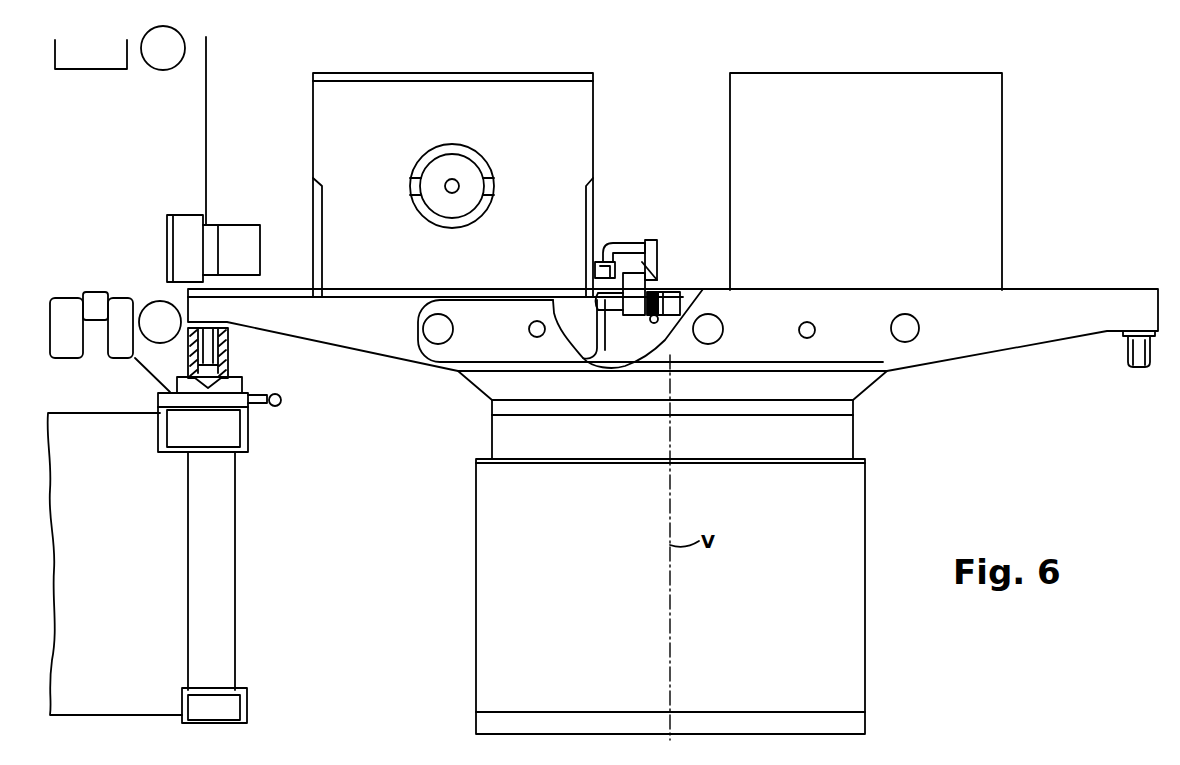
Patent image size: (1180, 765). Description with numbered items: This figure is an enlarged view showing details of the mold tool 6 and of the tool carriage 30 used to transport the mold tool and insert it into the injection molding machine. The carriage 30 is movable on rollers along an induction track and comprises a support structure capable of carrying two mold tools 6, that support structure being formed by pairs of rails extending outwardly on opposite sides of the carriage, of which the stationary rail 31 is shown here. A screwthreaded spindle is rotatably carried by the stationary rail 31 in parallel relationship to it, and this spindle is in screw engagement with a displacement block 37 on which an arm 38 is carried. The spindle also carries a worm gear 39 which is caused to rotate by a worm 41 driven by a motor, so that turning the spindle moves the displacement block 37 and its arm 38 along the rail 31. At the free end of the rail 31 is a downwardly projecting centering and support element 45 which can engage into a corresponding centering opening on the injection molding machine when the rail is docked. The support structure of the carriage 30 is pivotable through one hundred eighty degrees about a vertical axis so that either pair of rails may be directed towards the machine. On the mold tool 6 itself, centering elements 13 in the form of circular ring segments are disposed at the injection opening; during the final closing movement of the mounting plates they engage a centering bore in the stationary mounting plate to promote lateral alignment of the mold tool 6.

The mold tool 6 is at (587, 90).
The centering elements 13 is at (494, 186).
The tool carriage 30 is at (455, 529).
The rail 31 is at (333, 330).
The displacement block 37 is at (635, 283).
The arm 38 is at (615, 248).
The worm gear 39 is at (667, 300).
The worm 41 is at (652, 323).
The centering and support element 45 is at (228, 343).